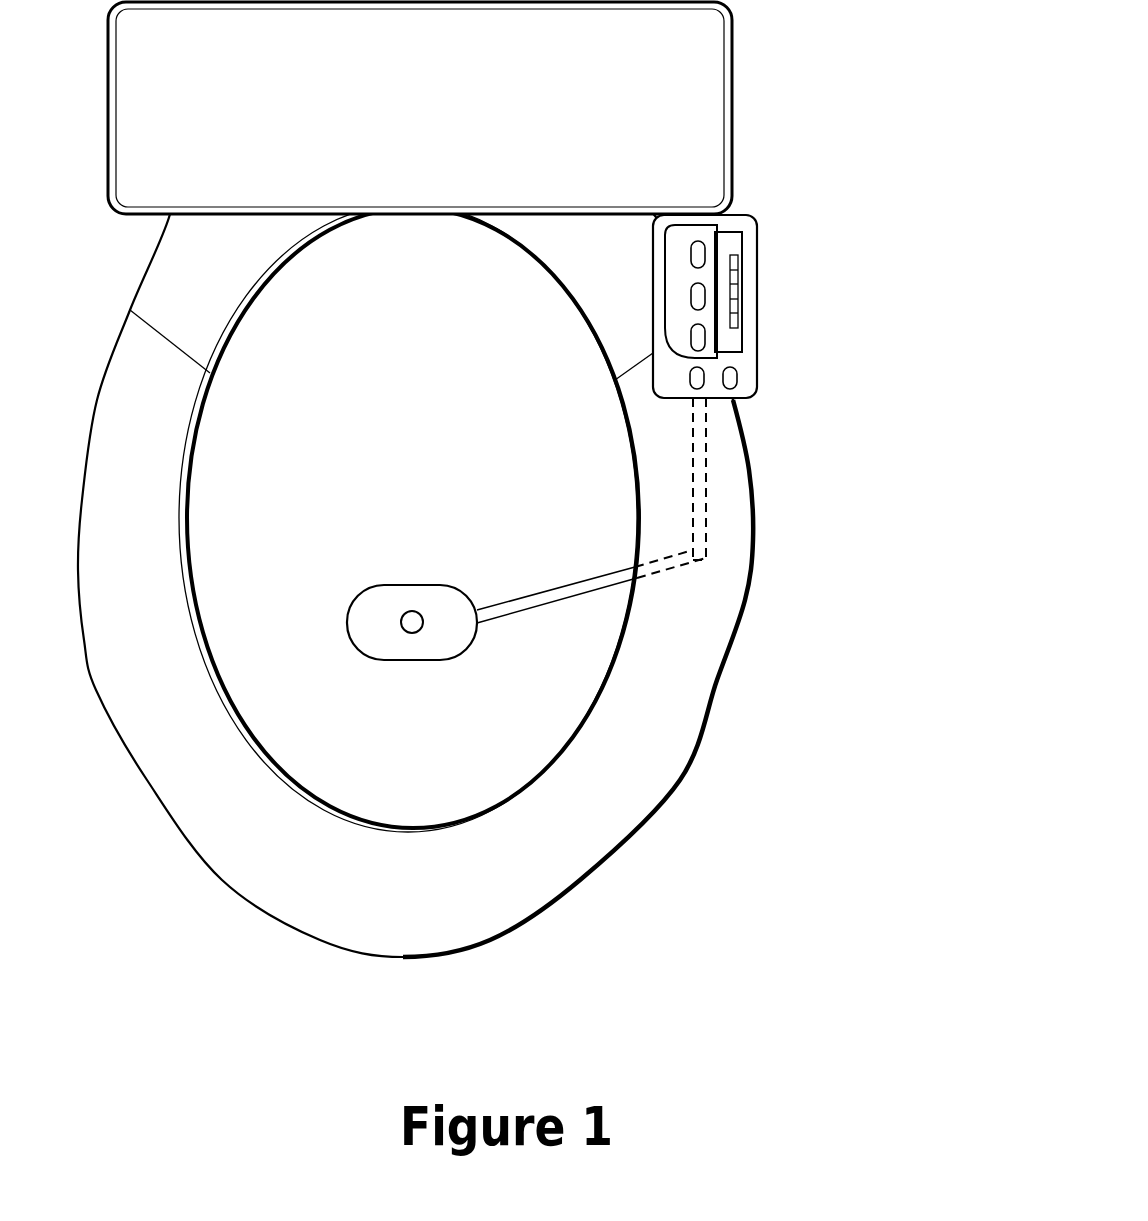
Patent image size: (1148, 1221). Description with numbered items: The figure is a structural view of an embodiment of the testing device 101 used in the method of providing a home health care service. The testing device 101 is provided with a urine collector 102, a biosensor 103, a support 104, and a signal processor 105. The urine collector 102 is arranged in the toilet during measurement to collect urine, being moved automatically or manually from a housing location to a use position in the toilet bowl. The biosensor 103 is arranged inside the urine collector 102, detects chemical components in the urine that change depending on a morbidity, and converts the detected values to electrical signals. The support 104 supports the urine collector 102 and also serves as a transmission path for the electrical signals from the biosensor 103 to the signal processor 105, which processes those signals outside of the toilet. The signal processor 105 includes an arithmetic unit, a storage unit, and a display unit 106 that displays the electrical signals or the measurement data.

The testing device 101 is at (609, 461).
The urine collector 102 is at (365, 605).
The biosensor 103 is at (408, 630).
The support 104 is at (590, 585).
The signal processor 105 is at (660, 232).
The display unit 106 is at (732, 242).